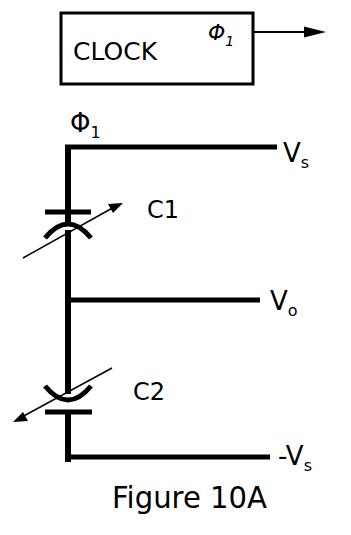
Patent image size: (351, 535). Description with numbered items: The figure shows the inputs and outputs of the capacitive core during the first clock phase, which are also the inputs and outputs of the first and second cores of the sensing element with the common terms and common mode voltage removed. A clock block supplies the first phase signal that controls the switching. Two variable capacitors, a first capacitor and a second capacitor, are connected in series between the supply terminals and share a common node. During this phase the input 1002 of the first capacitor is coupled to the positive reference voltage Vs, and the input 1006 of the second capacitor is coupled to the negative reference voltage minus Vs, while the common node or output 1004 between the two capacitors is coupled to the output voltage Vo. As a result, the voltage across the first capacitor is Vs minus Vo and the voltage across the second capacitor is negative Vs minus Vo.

The input of capacitor C1 1002 is at (142, 145).
The common node or output 1004 is at (140, 298).
The input of capacitor C2 1006 is at (143, 455).